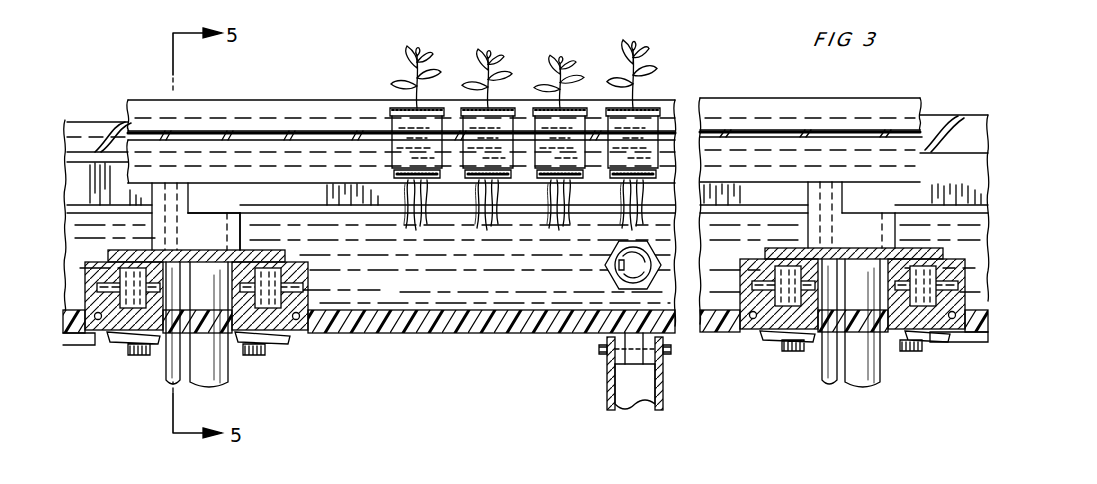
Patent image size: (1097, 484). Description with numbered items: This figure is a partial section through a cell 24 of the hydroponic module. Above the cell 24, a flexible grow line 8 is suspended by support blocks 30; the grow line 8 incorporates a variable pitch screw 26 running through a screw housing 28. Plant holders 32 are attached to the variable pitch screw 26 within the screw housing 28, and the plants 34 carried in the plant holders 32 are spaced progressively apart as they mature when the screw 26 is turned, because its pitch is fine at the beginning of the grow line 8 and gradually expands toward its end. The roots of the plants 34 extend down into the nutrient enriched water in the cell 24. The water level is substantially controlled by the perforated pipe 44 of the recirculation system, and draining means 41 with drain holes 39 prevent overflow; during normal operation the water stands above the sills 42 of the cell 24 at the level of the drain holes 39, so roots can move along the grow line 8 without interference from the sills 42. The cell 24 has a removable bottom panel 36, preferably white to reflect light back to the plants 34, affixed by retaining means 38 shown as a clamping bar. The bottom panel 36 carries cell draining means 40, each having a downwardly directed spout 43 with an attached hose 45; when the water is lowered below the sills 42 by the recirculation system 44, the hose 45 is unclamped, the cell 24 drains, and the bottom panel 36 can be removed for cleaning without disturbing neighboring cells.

The flexible grow line 8 is at (724, 94).
The cell 24 is at (438, 366).
The variable pitch screw 26 is at (100, 130).
The screw housing 28 is at (263, 110).
The support block 30 is at (233, 236).
The plant holder 32 is at (407, 150).
The plant 34 is at (430, 54).
The removable bottom panel 36 is at (452, 320).
The retaining means 38 is at (800, 352).
The drain hole 39 is at (212, 213).
The cell draining means 40 is at (600, 389).
The draining means 41 is at (210, 370).
The sill 42 is at (285, 258).
The spout 43 is at (663, 350).
The perforated pipe 44 is at (612, 262).
The hose 45 is at (661, 384).